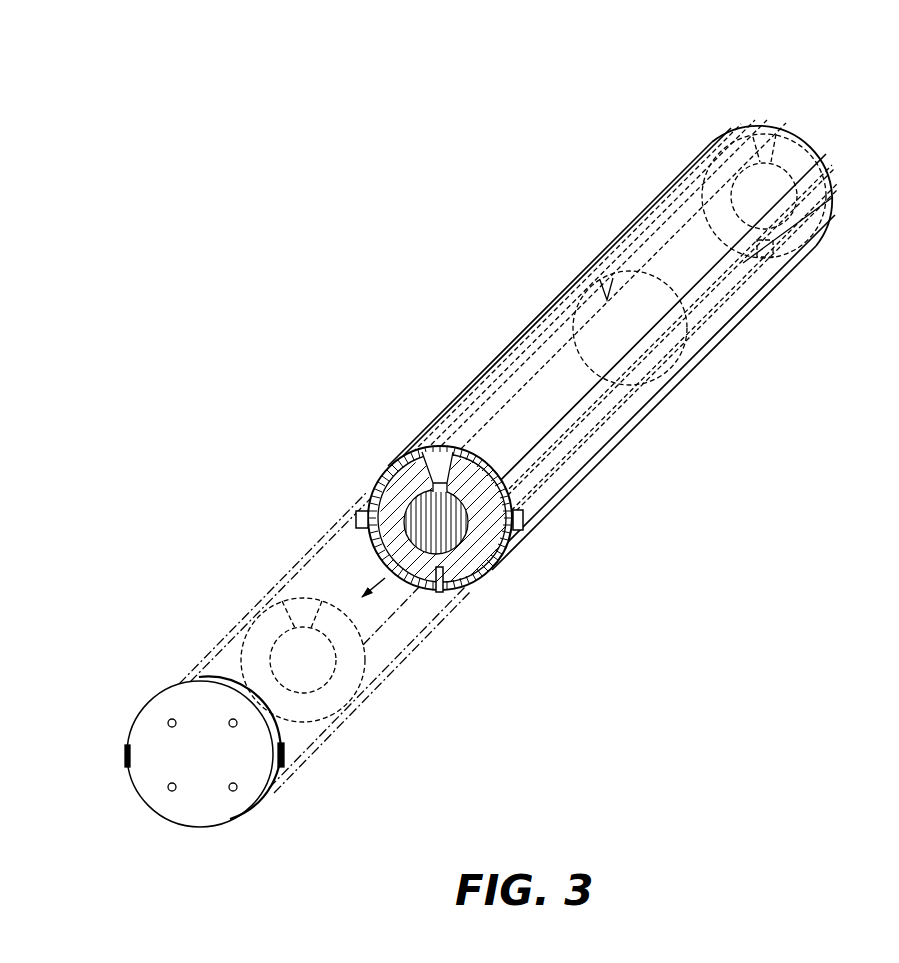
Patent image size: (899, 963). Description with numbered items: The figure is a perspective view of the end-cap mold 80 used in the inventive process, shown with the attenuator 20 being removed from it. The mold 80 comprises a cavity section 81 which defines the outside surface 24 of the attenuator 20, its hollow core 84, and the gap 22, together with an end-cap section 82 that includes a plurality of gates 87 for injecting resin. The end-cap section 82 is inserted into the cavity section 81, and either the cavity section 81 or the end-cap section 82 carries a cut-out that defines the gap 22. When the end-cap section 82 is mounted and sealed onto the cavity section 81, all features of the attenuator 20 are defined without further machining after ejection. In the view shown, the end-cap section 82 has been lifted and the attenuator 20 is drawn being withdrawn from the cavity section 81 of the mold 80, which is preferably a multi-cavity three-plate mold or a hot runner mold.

The mold 80 is at (465, 473).
The cavity section 81 is at (668, 392).
The end-cap section 82 is at (188, 740).
The hollow core 84 is at (448, 509).
The gates 87 is at (230, 790).
The attenuator 20 is at (390, 674).
The gap 22 is at (440, 478).
The outside surface 24 is at (483, 562).